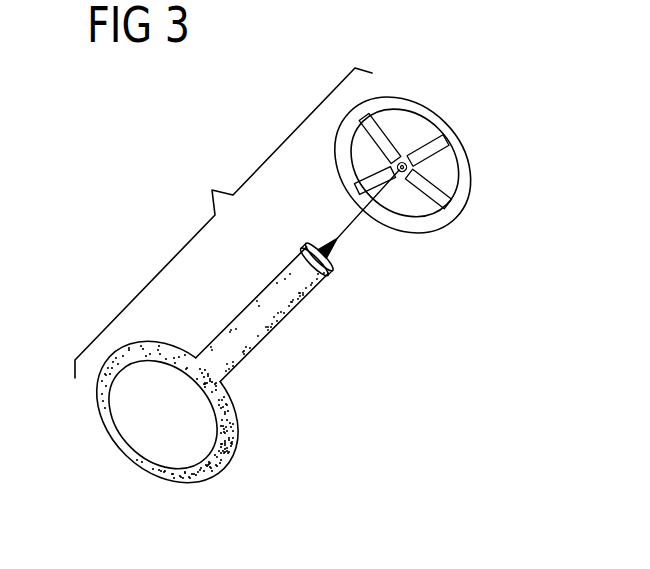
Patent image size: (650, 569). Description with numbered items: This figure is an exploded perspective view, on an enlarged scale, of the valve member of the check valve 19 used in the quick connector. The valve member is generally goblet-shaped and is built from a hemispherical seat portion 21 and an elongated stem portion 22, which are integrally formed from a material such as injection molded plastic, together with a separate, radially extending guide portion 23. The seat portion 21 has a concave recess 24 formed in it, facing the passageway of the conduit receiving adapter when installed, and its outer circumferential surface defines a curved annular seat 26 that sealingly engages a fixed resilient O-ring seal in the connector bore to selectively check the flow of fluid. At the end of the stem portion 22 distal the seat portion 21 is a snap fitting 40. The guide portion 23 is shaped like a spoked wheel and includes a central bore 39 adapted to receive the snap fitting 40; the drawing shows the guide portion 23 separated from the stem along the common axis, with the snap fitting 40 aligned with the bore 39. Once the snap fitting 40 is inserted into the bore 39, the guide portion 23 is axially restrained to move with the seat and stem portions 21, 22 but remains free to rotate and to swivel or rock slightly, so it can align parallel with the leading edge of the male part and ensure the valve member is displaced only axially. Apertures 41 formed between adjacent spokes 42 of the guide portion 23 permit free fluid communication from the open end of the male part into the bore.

The check valve 19 is at (128, 262).
The seat portion 21 is at (124, 447).
The stem portion 22 is at (258, 318).
The guide portion 23 is at (463, 173).
The concave recess 24 is at (192, 455).
The curved annular seat 26 is at (177, 353).
The central bore 39 is at (396, 168).
The snap fitting 40 is at (334, 252).
The apertures 41 is at (413, 130).
The spokes 42 is at (421, 163).